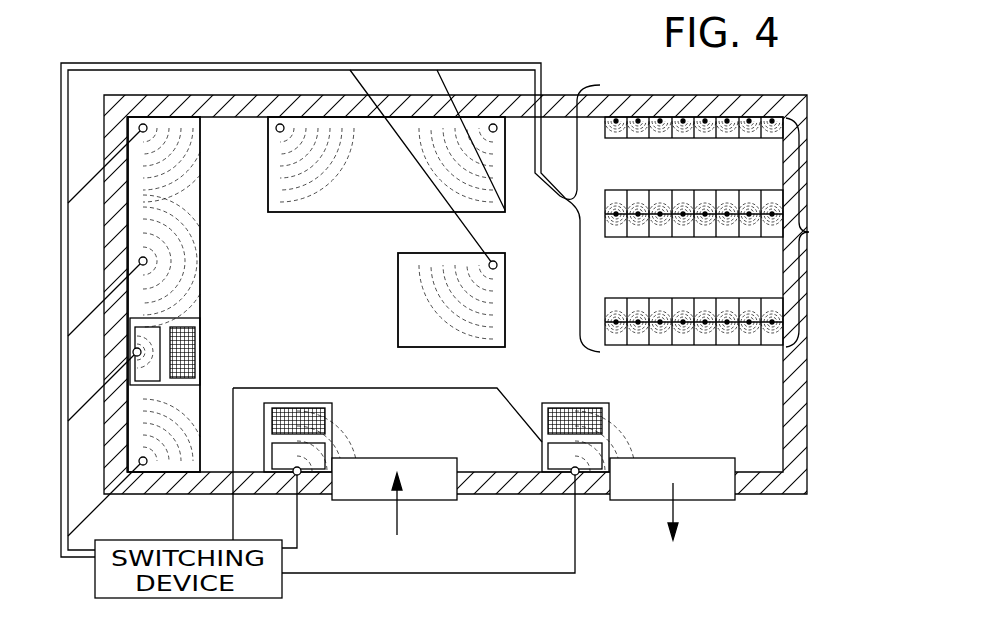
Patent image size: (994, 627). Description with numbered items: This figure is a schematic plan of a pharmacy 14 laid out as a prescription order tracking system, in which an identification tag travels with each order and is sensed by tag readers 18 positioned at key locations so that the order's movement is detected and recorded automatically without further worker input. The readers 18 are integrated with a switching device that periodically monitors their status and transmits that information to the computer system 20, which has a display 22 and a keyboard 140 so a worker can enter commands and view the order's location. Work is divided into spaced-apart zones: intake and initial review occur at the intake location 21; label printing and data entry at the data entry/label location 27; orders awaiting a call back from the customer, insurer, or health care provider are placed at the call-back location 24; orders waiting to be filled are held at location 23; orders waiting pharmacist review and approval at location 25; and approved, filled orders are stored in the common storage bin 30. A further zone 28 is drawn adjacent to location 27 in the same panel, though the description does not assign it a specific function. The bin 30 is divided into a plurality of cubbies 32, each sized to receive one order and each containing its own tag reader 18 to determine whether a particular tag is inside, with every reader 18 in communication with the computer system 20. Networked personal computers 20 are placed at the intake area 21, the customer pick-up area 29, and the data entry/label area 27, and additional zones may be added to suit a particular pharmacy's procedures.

The pharmacy 14 is at (778, 500).
The tag reader 18 is at (143, 124).
The computer system 20 is at (192, 319).
The intake location 21 is at (420, 473).
The display 22 is at (153, 361).
The location for orders waiting to be filled 23 is at (325, 212).
The call-back location 24 is at (440, 301).
The pharmacist review location 25 is at (505, 212).
The data entry/label location 27 is at (172, 262).
The panel 28 is at (170, 162).
The customer pick-up area 29 is at (670, 508).
The storage bin 30 is at (810, 233).
The cubby 32 is at (776, 198).
The keyboard 140 is at (183, 348).